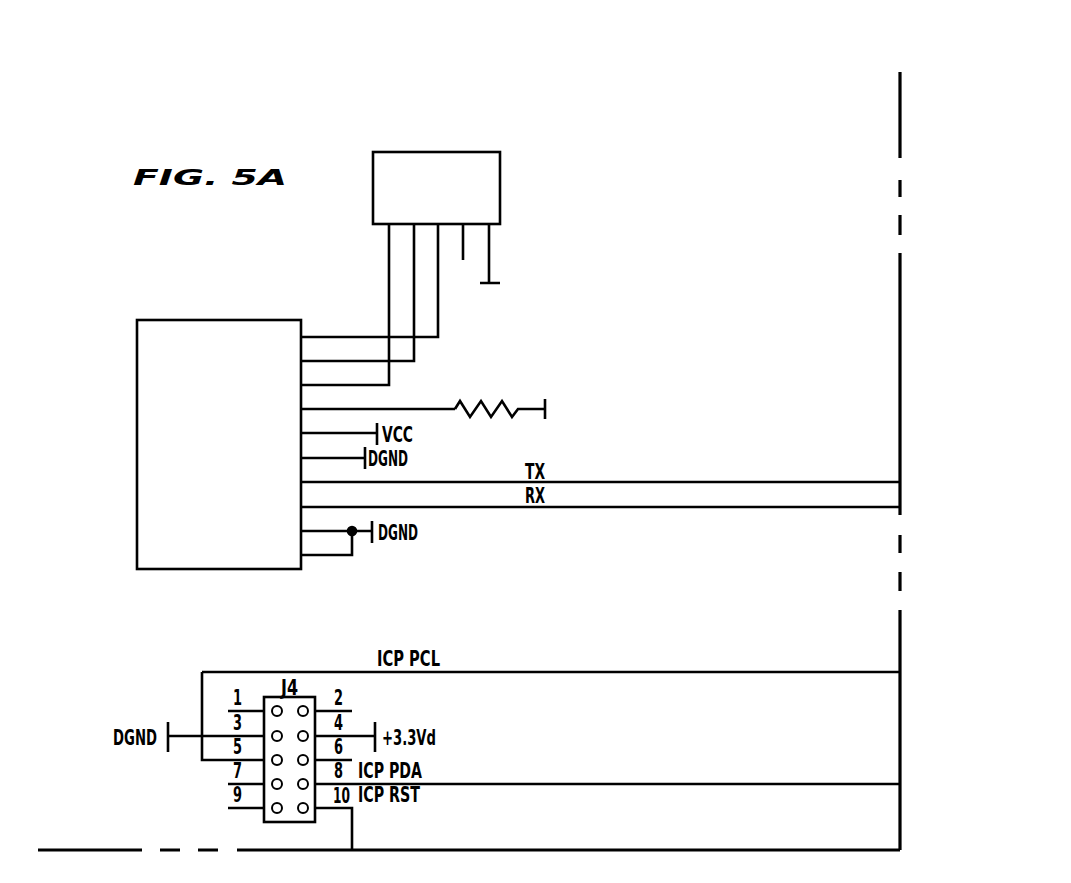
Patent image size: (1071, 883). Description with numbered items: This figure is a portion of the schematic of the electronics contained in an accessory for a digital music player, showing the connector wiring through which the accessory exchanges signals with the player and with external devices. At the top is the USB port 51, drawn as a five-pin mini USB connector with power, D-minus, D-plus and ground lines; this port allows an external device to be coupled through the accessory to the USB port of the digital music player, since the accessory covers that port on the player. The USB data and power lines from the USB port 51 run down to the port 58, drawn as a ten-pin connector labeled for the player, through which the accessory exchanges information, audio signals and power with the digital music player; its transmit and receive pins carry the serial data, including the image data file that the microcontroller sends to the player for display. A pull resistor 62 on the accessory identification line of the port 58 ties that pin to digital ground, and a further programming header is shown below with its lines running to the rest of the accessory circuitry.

The USB port 51 is at (500, 222).
The port 58 is at (240, 570).
The resistor R62 62 is at (525, 415).